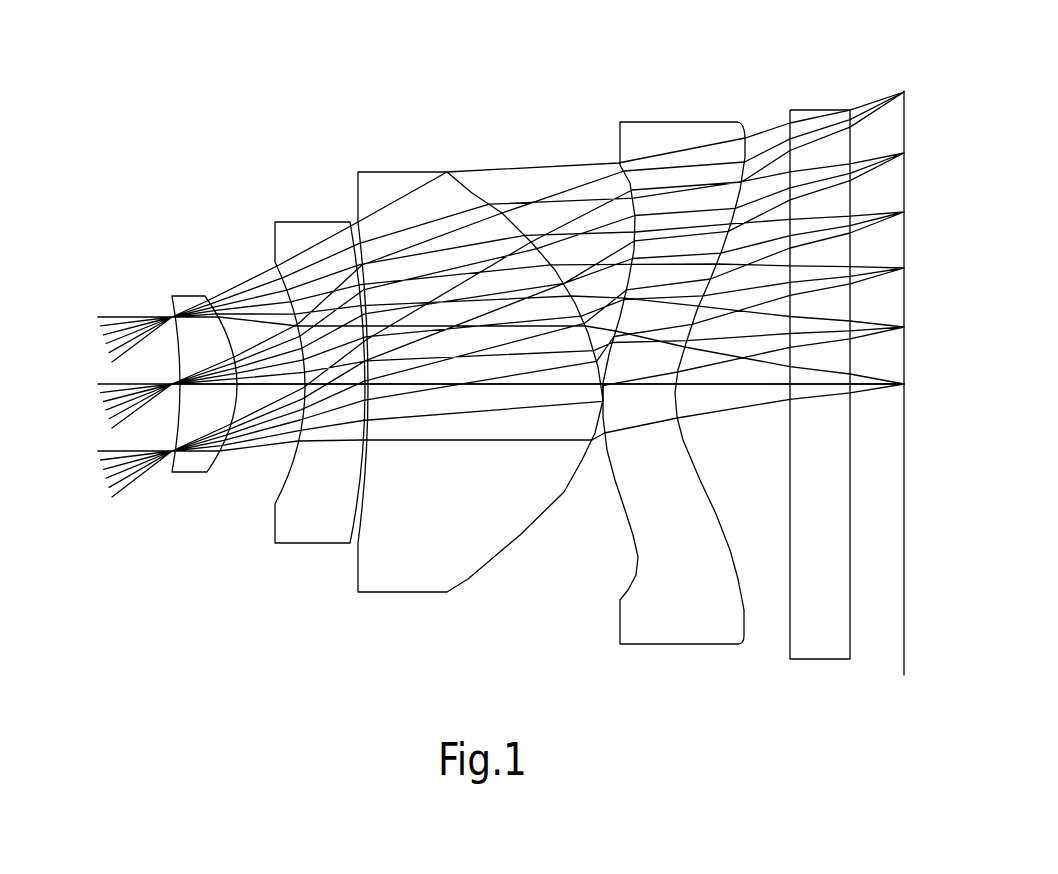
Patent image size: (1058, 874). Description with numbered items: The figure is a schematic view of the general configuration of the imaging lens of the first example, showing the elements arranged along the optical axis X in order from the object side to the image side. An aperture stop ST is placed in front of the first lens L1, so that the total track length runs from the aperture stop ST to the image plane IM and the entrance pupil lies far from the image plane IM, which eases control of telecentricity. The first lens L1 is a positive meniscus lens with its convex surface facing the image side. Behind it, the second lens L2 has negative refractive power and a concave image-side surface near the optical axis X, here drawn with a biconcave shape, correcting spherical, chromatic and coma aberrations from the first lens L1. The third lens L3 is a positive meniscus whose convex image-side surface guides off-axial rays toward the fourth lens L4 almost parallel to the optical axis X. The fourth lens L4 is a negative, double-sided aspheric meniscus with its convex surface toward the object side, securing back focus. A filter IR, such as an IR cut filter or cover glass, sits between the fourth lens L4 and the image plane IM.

The first lens L1 is at (187, 295).
The second lens L2 is at (298, 218).
The third lens L3 is at (403, 172).
The fourth lens L4 is at (680, 122).
The filter IR is at (818, 110).
The image plane IM is at (904, 646).
The optical axis X is at (98, 382).
The aperture stop ST is at (165, 452).